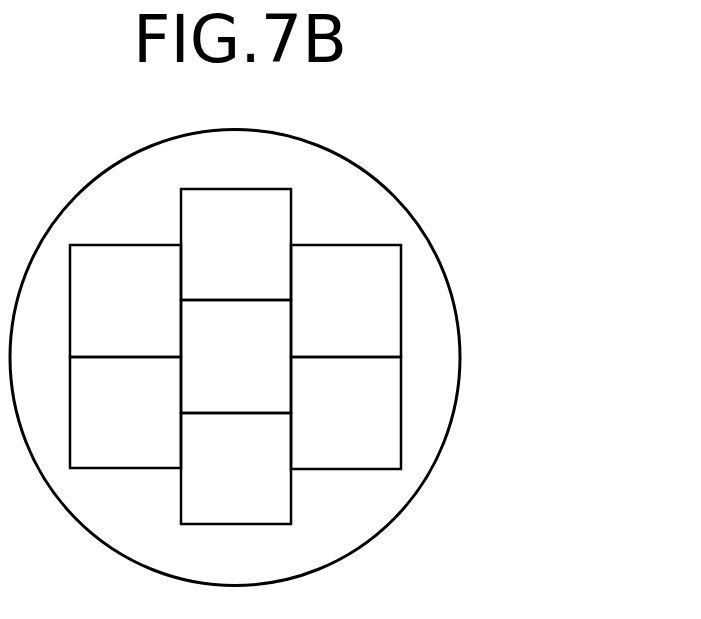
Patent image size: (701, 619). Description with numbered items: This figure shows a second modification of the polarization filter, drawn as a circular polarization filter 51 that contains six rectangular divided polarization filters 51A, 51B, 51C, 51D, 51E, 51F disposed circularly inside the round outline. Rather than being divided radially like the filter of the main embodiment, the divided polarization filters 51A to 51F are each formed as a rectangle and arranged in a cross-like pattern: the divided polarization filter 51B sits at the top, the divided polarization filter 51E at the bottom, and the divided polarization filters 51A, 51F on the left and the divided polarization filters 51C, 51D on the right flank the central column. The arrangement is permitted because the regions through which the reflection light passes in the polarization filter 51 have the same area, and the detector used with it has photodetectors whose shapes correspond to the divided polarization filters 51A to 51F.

The polarization filter 51 is at (380, 179).
The divided polarization filter 51A is at (157, 318).
The divided polarization filter 51B is at (268, 263).
The divided polarization filter 51C is at (377, 320).
The divided polarization filter 51D is at (378, 432).
The divided polarization filter 51E is at (267, 488).
The divided polarization filter 51F is at (155, 430).